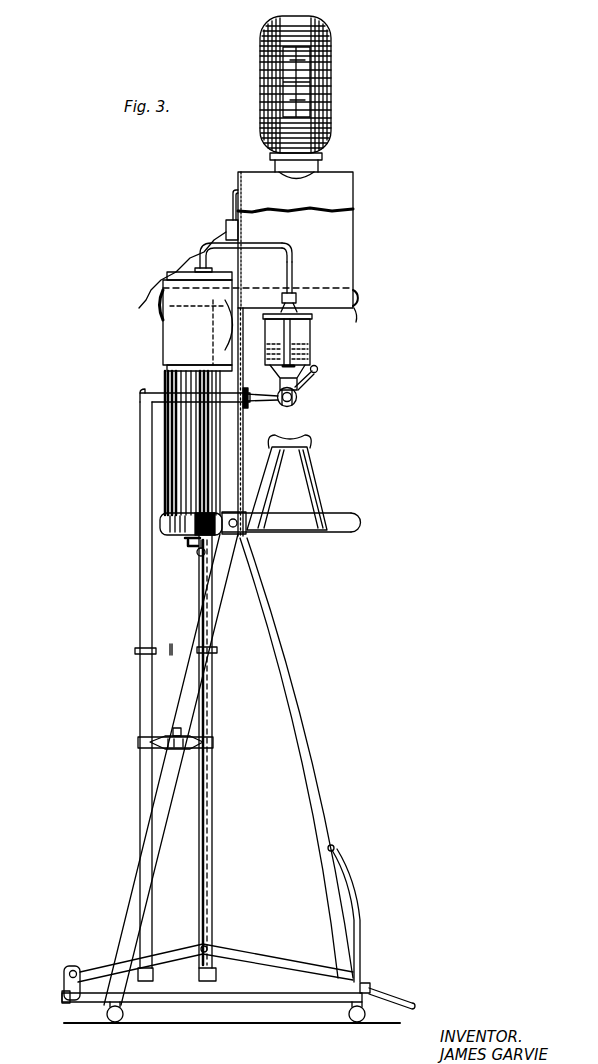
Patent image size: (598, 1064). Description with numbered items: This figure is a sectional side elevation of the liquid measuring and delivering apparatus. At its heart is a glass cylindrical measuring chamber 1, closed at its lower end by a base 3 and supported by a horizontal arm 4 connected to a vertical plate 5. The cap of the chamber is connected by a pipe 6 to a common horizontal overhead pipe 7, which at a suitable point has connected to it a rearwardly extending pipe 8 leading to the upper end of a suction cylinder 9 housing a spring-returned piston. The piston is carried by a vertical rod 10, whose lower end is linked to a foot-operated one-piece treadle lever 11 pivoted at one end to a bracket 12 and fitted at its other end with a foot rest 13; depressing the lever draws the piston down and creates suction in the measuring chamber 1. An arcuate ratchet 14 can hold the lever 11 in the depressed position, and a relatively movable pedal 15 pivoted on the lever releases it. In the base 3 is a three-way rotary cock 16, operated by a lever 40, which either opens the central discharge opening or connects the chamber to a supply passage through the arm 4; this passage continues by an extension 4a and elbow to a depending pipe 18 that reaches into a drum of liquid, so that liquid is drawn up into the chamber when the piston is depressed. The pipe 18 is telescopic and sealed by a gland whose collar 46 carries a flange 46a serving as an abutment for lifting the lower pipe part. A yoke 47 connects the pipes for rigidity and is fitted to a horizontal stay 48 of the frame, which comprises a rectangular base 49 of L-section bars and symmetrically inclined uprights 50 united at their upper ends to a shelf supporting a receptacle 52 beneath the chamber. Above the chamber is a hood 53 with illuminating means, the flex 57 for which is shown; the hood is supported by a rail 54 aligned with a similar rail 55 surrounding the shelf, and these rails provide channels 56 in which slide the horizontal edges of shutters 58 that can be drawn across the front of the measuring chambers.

The measuring chamber 1 is at (310, 334).
The base 3 is at (279, 373).
The horizontal arm 4 is at (257, 401).
The extension 4a is at (146, 412).
The vertical plate 5 is at (244, 446).
The pipe 6 is at (293, 266).
The common horizontal overhead pipe 7 is at (293, 247).
The pipe 8 is at (273, 243).
The suction cylinder 9 is at (164, 350).
The vertical rod 10 is at (152, 392).
The treadle lever 11 is at (257, 953).
The bracket 12 is at (64, 989).
The foot rest 13 is at (408, 1002).
The arcuate ratchet 14 is at (358, 905).
The pedal 15 is at (371, 988).
The three-way rotary cock 16 is at (296, 401).
The depending pipe 18 is at (140, 607).
The lever 40 is at (316, 381).
The collar 46 is at (135, 651).
The flange 46a is at (170, 648).
The yoke 47 is at (158, 737).
The horizontal stay 48 is at (205, 733).
The rectangular base 49 is at (235, 1004).
The inclined upright 50 is at (311, 786).
The receptacle 52 is at (318, 480).
The hood 53 is at (354, 222).
The rail 54 is at (363, 298).
The rail 55 is at (361, 528).
The channel 56 is at (357, 316).
The flex 57 is at (182, 252).
The shutter 58 is at (172, 464).